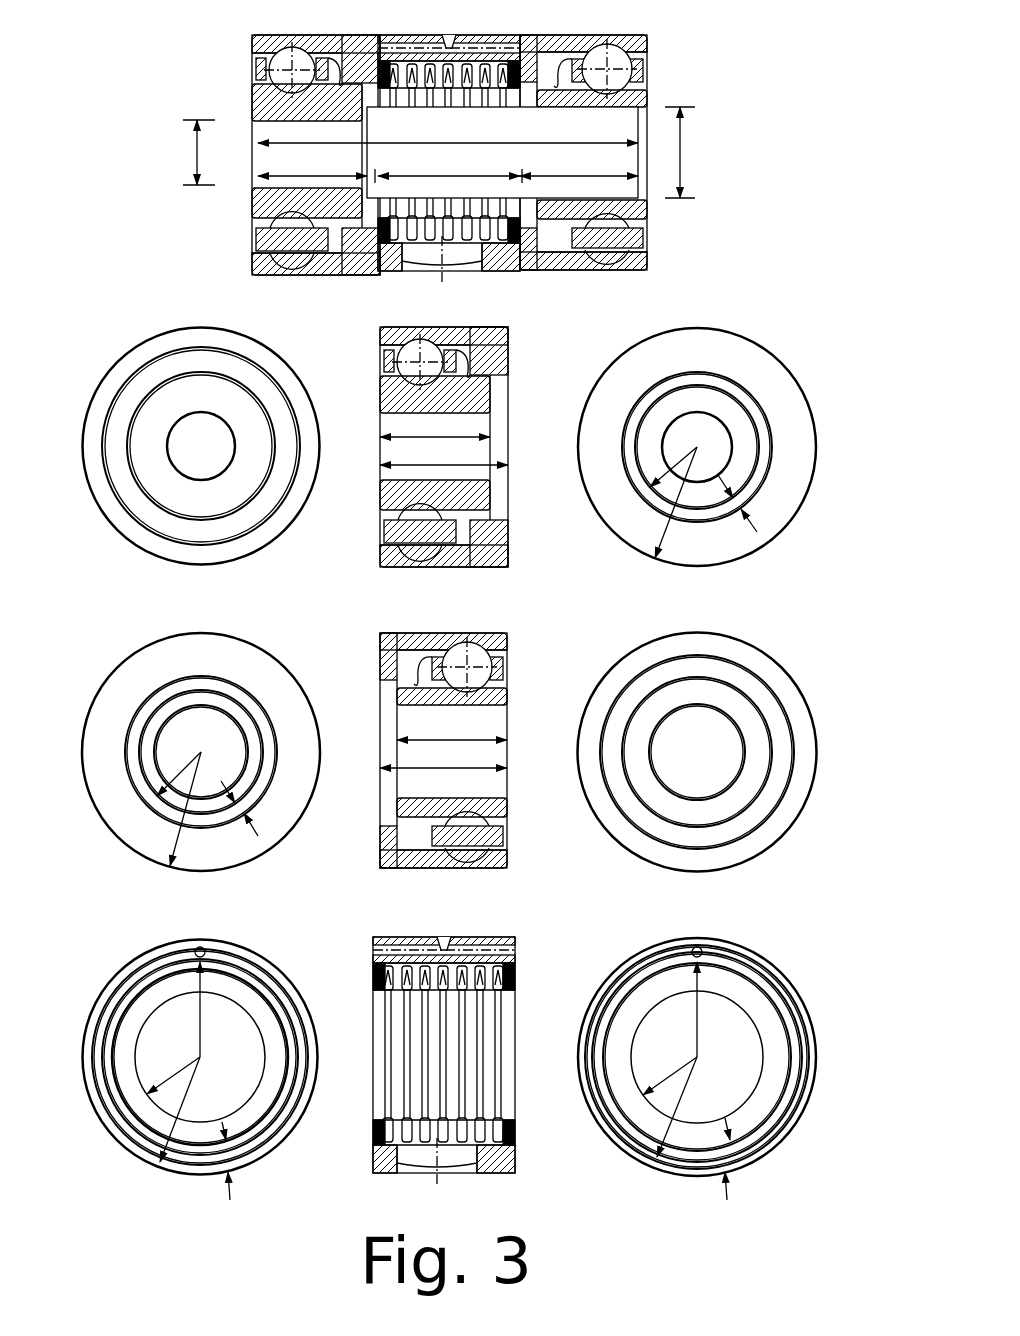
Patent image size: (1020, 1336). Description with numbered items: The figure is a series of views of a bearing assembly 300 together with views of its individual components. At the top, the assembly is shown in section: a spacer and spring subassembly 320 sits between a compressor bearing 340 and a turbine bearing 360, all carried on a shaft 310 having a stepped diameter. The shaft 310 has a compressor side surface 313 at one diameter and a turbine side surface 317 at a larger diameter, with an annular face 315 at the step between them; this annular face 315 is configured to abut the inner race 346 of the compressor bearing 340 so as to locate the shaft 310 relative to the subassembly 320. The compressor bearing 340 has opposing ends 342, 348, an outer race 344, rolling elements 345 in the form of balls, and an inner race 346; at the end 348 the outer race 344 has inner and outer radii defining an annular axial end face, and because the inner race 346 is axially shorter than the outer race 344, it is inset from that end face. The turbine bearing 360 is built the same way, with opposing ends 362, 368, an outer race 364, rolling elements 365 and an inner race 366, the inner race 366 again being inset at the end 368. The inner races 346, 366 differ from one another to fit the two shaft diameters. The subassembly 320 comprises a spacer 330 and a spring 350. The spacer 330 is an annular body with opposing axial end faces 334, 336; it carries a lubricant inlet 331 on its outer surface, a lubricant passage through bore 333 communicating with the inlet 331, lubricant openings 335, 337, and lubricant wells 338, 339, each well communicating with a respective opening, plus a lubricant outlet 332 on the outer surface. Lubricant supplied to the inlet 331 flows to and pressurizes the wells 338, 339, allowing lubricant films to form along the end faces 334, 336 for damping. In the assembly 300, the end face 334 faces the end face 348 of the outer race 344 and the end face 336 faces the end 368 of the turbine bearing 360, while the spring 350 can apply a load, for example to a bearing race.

The bearing assembly 300 is at (193, 22).
The shaft 310 is at (548, 140).
The compressor side surface 313 is at (253, 183).
The annular face 315 is at (370, 122).
The turbine side surface 317 is at (645, 190).
The spacer and spring subassembly 320 is at (516, 283).
The spacer 330 is at (115, 972).
The lubricant inlet 331 is at (438, 940).
The lubricant outlet 332 is at (455, 1165).
The lubricant passage through bore 333 is at (450, 940).
The axial end face 334 is at (113, 1160).
The lubricant opening 335 is at (200, 946).
The axial end face 336 is at (530, 1172).
The lubricant opening 337 is at (512, 957).
The lubricant well 338 is at (106, 1014).
The lubricant well 339 is at (516, 1157).
The compressor bearing 340 is at (203, 64).
The end 342 is at (118, 546).
The outer race 344 is at (137, 360).
The rolling elements 345 is at (135, 393).
The inner race 346 is at (142, 445).
The end 348 is at (520, 562).
The spring 350 is at (127, 1073).
The turbine bearing 360 is at (672, 50).
The end 362 is at (520, 878).
The outer race 364 is at (125, 690).
The rolling elements 365 is at (497, 668).
The inner race 366 is at (148, 746).
The end 368 is at (113, 861).